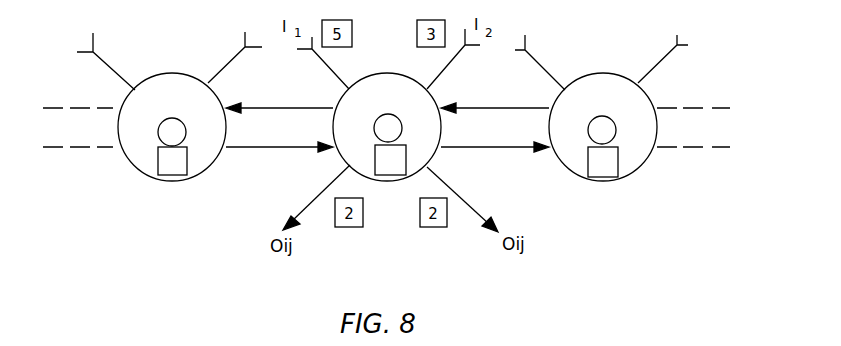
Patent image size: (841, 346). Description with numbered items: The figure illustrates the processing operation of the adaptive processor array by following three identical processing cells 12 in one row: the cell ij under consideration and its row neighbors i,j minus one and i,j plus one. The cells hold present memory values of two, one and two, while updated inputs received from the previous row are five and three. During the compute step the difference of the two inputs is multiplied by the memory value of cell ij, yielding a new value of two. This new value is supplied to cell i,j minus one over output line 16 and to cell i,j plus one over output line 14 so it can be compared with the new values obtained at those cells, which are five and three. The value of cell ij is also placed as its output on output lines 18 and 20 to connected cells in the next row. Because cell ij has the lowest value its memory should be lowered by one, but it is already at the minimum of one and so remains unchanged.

The processing cell 12 is at (187, 74).
The output line 14 is at (78, 148).
The output line 16 is at (90, 106).
The output line 18 is at (227, 65).
The output line 20 is at (116, 68).